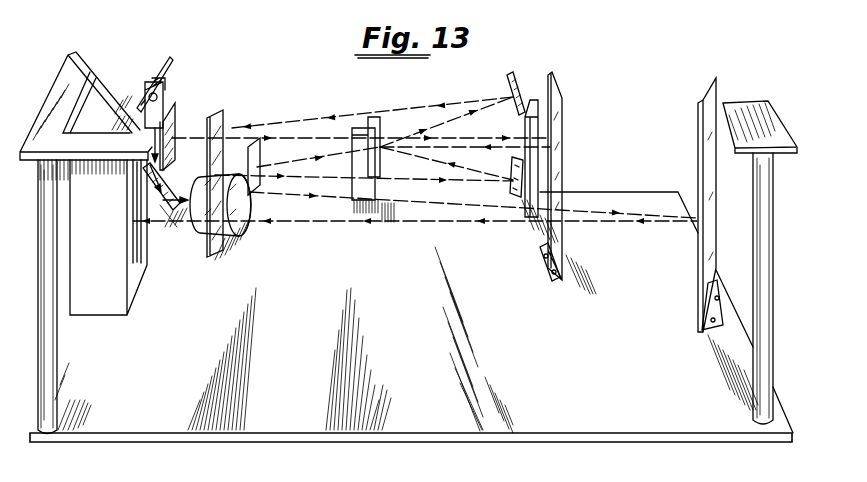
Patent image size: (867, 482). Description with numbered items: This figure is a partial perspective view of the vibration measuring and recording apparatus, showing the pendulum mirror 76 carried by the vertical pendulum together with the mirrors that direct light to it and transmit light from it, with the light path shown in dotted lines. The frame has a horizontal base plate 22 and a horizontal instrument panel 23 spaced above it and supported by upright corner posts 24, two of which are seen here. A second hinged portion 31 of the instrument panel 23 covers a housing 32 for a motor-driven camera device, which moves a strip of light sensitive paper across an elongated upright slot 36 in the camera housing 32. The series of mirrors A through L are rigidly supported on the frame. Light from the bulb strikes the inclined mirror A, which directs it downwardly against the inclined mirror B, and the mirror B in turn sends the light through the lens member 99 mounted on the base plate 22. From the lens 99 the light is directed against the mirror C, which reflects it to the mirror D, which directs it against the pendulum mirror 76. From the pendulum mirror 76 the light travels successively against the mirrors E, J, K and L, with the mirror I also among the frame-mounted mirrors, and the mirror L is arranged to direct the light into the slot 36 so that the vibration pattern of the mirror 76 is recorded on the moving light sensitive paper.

The base plate 22 is at (576, 432).
The instrument panel 23 is at (62, 75).
The corner posts 24 is at (38, 300).
The second hinged portion 31 is at (102, 84).
The camera housing 32 is at (106, 308).
The slot 36 is at (137, 244).
The pendulum mirror 76 is at (516, 74).
The lens member 99 is at (248, 236).
The inclined mirror A is at (165, 66).
The inclined mirror B is at (170, 184).
The mirror C is at (512, 160).
The mirror D is at (380, 118).
The mirror E is at (174, 104).
The mirror I is at (262, 160).
The mirror J is at (563, 80).
The mirror K is at (224, 108).
The mirror L is at (714, 78).